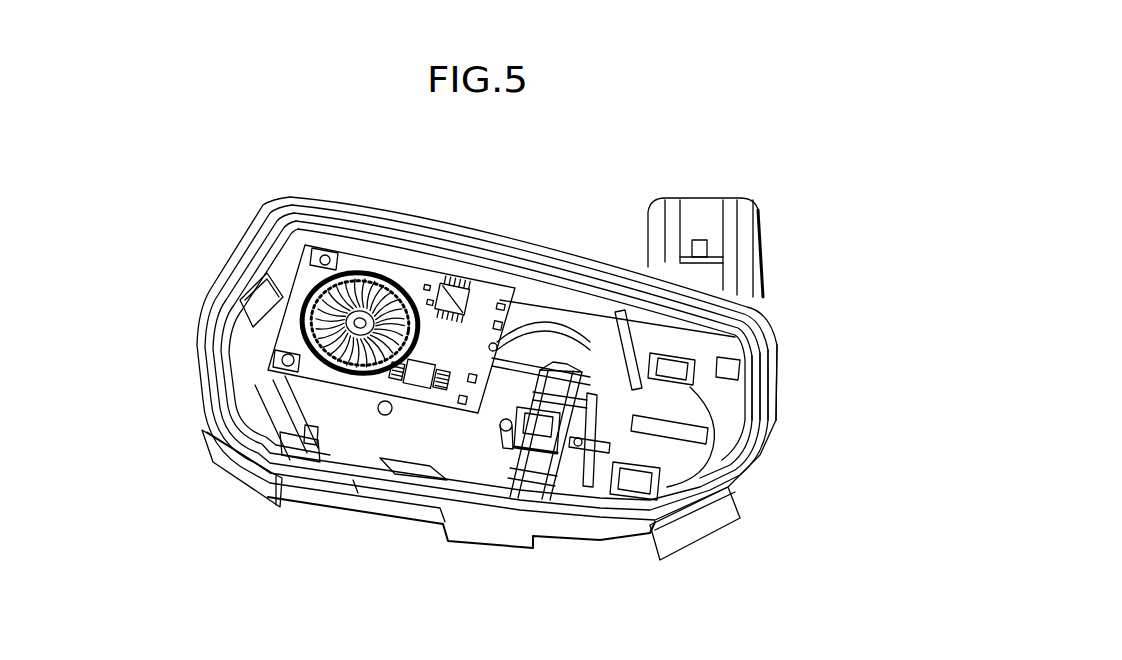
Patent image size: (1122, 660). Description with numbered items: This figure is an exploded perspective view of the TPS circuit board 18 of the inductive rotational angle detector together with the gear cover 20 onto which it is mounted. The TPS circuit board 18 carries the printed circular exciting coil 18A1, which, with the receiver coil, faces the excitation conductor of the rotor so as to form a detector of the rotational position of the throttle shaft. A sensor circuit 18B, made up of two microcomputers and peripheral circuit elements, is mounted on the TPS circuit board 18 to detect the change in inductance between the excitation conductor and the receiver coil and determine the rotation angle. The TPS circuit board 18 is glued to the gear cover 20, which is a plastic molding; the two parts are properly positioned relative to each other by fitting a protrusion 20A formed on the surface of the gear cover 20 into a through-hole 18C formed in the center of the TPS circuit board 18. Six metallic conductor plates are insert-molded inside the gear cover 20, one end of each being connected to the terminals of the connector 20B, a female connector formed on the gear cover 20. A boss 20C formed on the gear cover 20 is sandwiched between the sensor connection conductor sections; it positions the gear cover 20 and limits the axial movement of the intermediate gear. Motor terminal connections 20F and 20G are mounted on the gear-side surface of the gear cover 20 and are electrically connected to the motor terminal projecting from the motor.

The TPS circuit board 18 is at (423, 277).
The circular exciting coil 18A1 is at (310, 287).
The sensor circuit 18B is at (487, 263).
The through-hole 18C is at (378, 285).
The gear cover 20 is at (347, 423).
The protrusion 20A is at (380, 413).
The connector 20B is at (708, 228).
The boss 20C is at (563, 450).
The motor terminal connection 20F is at (693, 537).
The motor terminal connection 20G is at (763, 453).